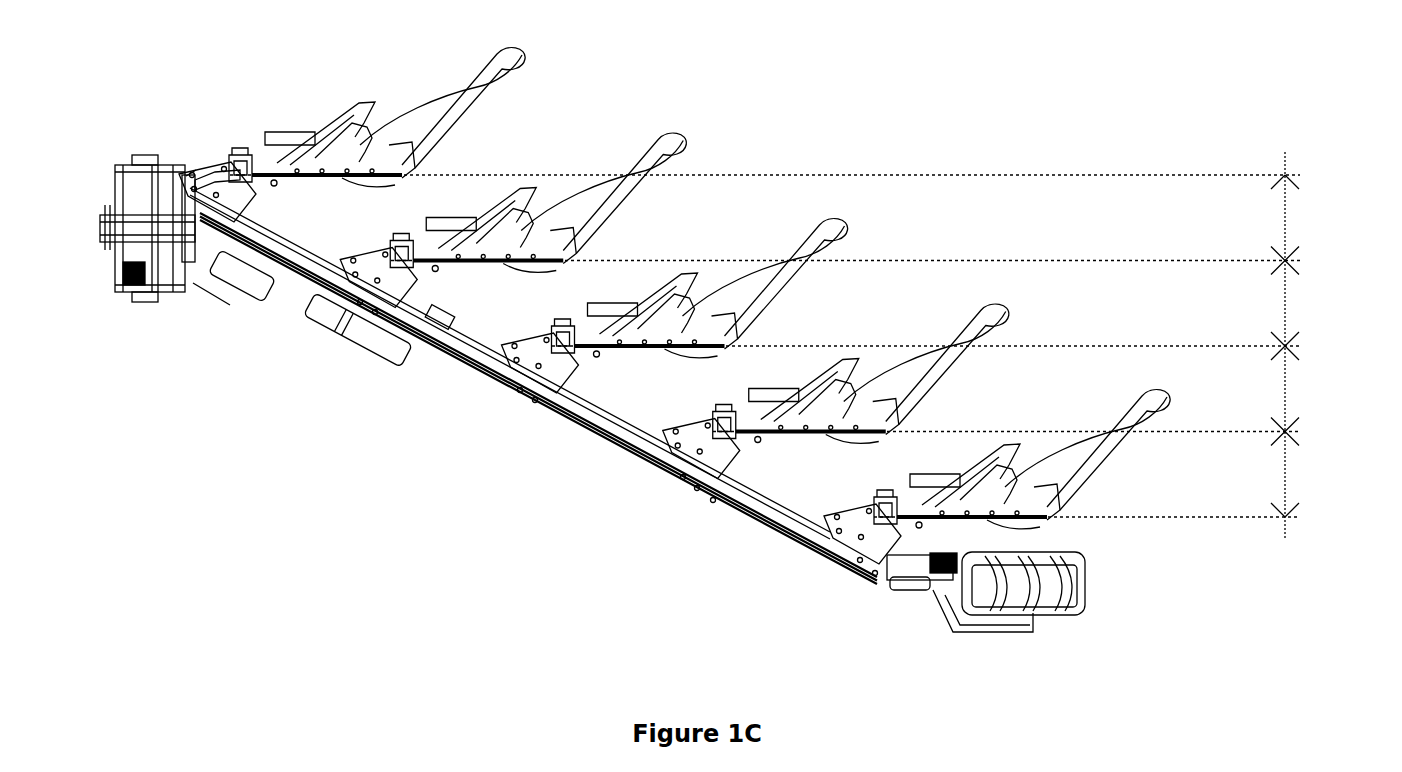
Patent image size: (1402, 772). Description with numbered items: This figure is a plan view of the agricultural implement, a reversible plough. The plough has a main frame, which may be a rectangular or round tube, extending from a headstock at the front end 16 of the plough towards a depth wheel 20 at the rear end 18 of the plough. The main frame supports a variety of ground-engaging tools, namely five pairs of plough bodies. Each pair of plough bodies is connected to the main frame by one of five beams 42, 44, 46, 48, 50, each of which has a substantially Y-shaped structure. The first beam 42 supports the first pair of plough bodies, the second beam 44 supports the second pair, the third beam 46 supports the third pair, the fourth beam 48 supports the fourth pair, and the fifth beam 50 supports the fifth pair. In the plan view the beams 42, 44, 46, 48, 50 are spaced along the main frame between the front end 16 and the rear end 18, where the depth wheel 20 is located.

The front end 16 is at (131, 228).
The rear end 18 is at (1332, 346).
The depth wheel 20 is at (1065, 600).
The first beam 42 is at (268, 165).
The second beam 44 is at (513, 220).
The third beam 46 is at (675, 306).
The fourth beam 48 is at (836, 391).
The fifth beam 50 is at (997, 477).